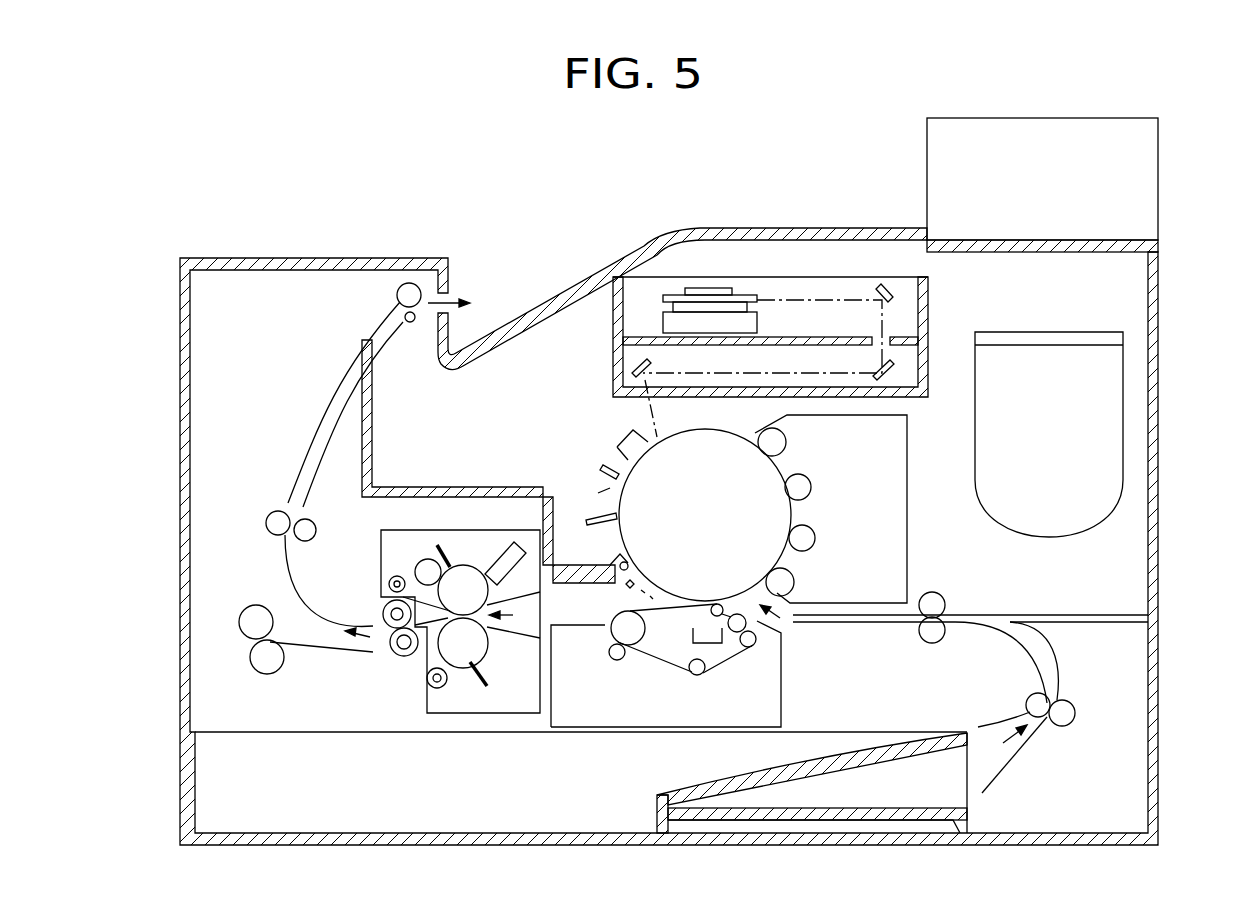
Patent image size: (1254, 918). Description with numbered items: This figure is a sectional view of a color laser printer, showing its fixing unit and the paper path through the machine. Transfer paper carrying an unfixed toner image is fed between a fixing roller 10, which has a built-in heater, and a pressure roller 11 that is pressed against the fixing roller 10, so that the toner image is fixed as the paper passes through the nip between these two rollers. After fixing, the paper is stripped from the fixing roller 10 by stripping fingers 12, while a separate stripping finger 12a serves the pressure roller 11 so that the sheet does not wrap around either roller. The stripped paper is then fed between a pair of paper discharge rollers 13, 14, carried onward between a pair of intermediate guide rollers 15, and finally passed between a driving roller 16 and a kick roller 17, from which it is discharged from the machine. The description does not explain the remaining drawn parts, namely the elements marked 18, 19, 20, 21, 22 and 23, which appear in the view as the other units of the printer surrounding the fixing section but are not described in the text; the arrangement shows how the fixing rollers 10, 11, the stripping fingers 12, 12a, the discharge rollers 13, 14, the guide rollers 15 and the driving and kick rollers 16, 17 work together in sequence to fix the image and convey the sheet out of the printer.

The fixing roller 10 is at (463, 585).
The pressure roller 11 is at (472, 648).
The stripping fingers 12 is at (398, 578).
The stripping finger 12a is at (432, 652).
The paper discharge roller 13 is at (385, 603).
The paper discharge roller 14 is at (397, 653).
The intermediate guide rollers 15 is at (305, 532).
The driving roller 16 is at (409, 283).
The kick roller 17 is at (403, 316).
The optical scanning unit 18 is at (808, 277).
The toner container 19 is at (1126, 392).
The photosensitive drum 20 is at (657, 490).
The transfer unit 21 is at (634, 656).
The paper feed tray 22 is at (853, 733).
The developing unit 23 is at (477, 714).